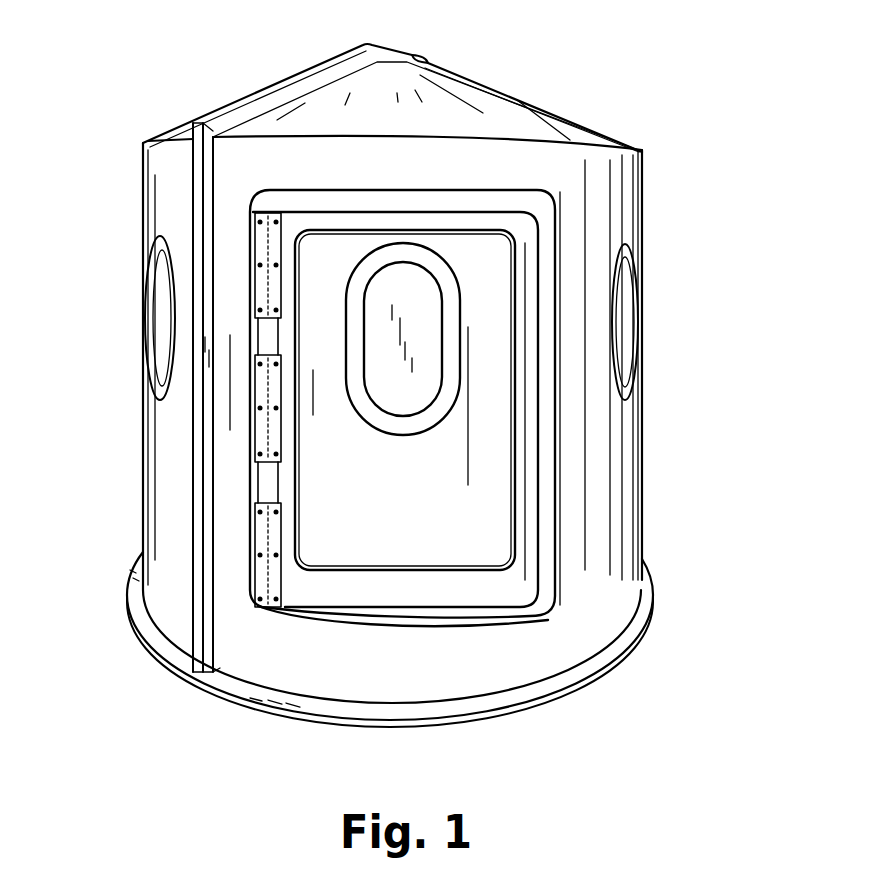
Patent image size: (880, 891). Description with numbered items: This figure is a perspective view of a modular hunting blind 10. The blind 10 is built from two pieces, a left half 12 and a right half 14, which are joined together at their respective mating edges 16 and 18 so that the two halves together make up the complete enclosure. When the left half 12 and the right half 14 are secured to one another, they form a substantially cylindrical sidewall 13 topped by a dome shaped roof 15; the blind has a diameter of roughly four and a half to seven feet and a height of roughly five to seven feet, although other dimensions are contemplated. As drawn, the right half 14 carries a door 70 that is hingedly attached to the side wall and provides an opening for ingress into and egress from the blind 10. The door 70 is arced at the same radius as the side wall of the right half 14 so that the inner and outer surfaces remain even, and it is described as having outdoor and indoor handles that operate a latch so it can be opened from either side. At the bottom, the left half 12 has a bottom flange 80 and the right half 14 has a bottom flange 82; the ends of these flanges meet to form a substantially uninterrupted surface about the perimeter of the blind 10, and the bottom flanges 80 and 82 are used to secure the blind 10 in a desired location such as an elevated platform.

The blind 10 is at (240, 758).
The left half 12 is at (126, 512).
The sidewall 13 is at (617, 194).
The right half 14 is at (662, 486).
The roof 15 is at (507, 120).
The mating edge 16 is at (228, 105).
The mating edge 18 is at (419, 56).
The door 70 is at (393, 596).
The bottom flange 80 is at (160, 656).
The bottom flange 82 is at (458, 723).